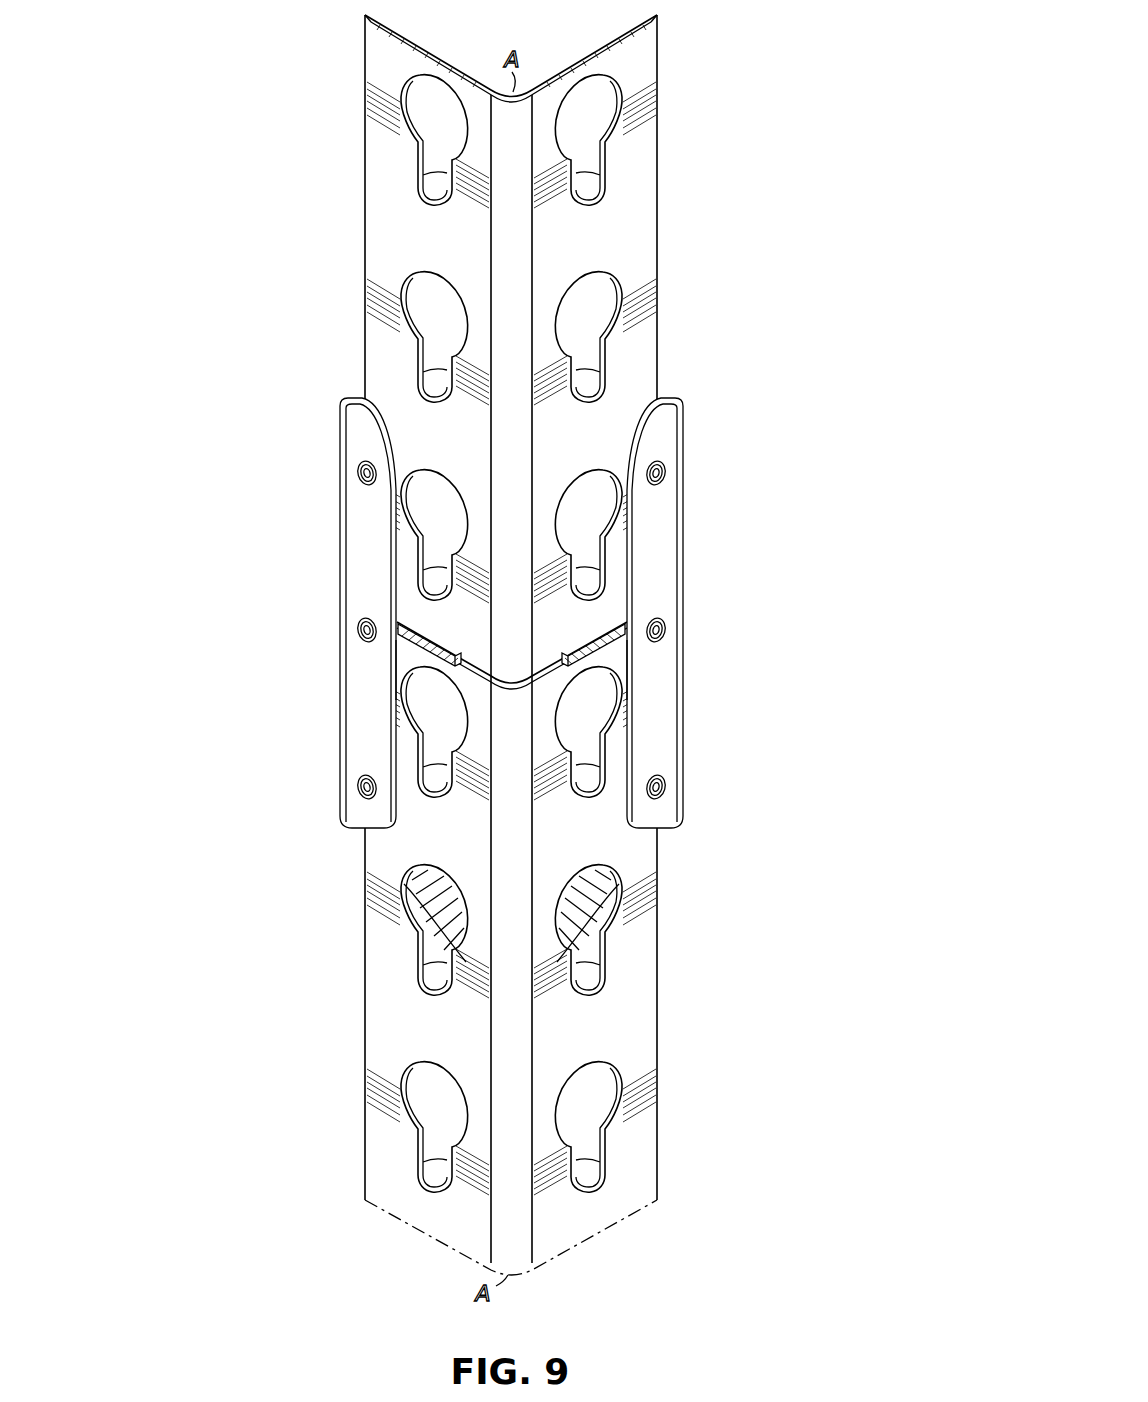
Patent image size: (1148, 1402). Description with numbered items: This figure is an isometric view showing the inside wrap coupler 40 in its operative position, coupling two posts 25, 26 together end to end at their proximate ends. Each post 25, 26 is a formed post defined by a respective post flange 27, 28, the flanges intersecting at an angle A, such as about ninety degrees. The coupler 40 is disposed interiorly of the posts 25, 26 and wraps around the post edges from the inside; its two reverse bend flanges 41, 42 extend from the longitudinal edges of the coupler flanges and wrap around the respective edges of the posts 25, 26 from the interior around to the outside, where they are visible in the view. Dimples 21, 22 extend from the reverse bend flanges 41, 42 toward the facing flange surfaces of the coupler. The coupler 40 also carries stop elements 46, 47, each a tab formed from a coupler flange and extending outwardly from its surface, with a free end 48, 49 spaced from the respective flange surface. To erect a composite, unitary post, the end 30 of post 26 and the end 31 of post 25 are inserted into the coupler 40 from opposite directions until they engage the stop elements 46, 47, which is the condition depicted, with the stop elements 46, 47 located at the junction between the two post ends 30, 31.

The dimple 21 is at (666, 478).
The dimple 22 is at (358, 478).
The post 25 is at (366, 268).
The post 26 is at (366, 1090).
The post flange 27 is at (638, 318).
The post flange 28 is at (385, 316).
The end of post 26 30 is at (481, 688).
The end of post 25 31 is at (480, 666).
The inside wrap coupler 40 is at (500, 613).
The reverse bend flange 41 is at (660, 512).
The reverse bend flange 42 is at (368, 512).
The stop element 46 is at (590, 636).
The stop element 47 is at (429, 636).
The free end 48 is at (613, 660).
The free end 49 is at (410, 660).